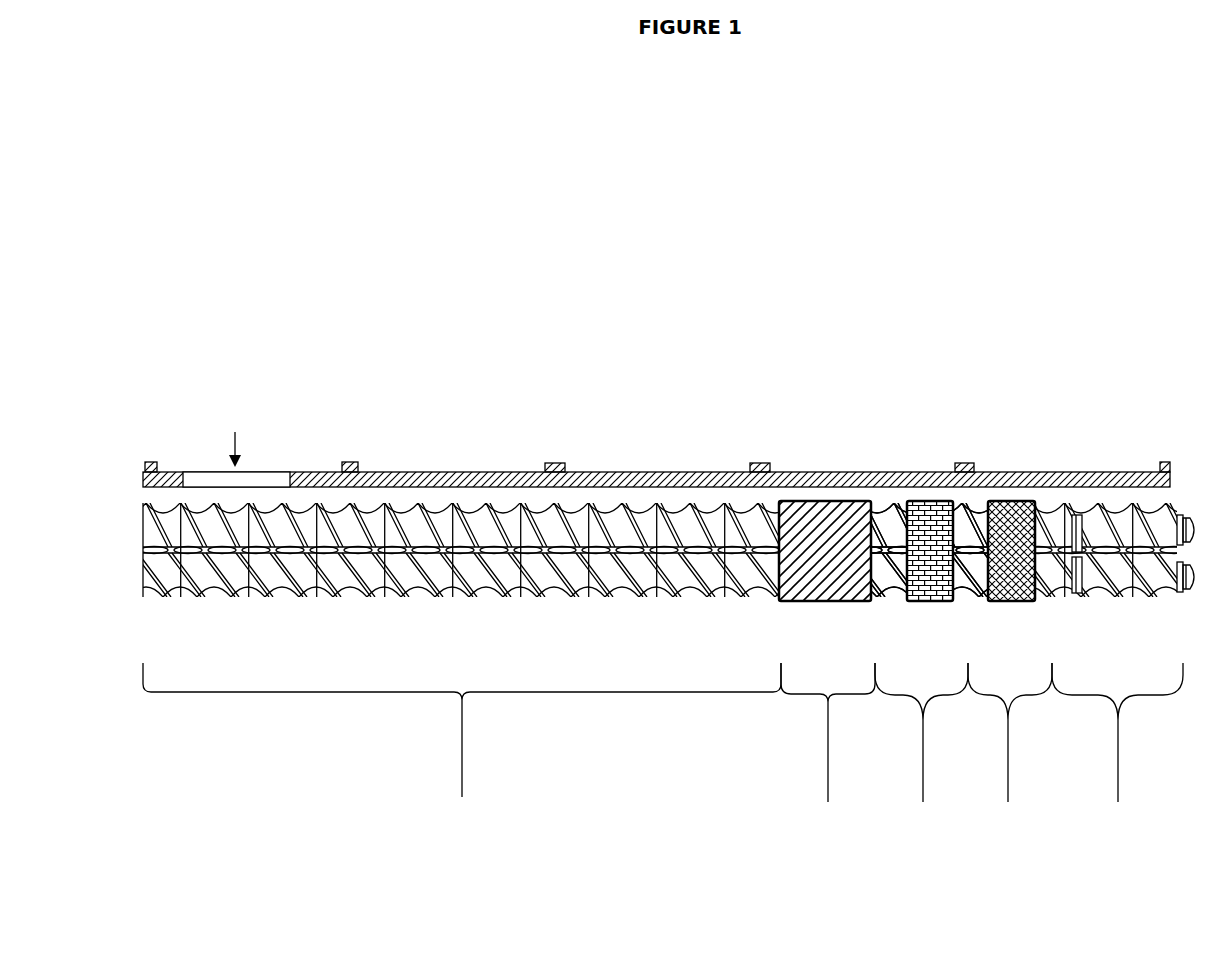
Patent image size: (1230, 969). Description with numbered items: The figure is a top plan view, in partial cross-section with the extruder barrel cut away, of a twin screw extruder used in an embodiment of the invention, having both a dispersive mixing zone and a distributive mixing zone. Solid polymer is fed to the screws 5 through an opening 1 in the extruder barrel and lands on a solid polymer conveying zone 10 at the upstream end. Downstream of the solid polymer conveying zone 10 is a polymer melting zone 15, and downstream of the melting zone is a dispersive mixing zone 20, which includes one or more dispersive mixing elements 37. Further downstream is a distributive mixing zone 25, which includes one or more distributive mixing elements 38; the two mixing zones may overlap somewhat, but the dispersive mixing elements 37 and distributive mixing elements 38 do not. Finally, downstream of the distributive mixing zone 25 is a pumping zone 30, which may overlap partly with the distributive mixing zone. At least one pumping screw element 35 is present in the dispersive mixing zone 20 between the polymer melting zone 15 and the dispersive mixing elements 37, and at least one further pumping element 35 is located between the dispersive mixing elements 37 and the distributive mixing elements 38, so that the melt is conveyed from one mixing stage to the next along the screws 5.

The opening 1 is at (248, 478).
The screws 5 is at (428, 527).
The solid polymer conveying zone 10 is at (462, 756).
The polymer melting zone 15 is at (827, 675).
The dispersive mixing zone 20 is at (921, 756).
The distributive mixing zone 25 is at (1010, 756).
The pumping zone 30 is at (1123, 682).
The pumping screw element 35 is at (968, 523).
The dispersive mixing elements 37 is at (935, 573).
The distributive mixing elements 38 is at (1017, 528).